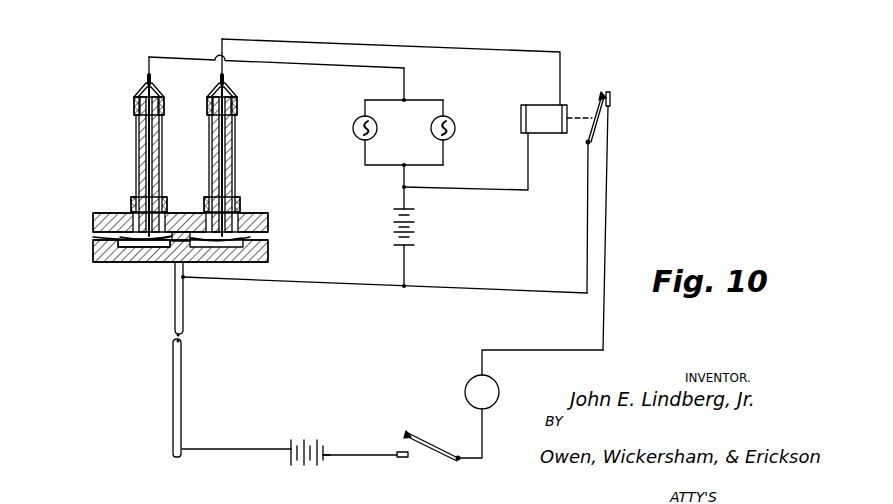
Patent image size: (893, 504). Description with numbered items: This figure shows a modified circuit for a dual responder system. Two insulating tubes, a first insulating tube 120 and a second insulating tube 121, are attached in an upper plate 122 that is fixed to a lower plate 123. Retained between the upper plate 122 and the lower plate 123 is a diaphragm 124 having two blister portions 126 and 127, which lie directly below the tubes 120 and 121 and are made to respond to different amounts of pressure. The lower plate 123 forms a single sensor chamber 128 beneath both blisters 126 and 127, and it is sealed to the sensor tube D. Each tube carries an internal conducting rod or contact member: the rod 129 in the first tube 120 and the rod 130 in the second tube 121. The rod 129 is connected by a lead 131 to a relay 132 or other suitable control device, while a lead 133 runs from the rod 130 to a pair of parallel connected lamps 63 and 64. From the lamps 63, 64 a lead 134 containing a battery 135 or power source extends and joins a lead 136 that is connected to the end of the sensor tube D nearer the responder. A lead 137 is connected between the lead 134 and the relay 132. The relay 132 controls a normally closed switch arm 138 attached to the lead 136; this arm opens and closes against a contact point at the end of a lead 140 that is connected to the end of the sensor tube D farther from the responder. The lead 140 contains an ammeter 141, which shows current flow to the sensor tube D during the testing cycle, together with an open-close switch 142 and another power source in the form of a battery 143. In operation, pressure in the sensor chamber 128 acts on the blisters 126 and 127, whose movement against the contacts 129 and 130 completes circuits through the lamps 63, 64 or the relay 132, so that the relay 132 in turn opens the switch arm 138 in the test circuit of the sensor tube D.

The first insulating tube 120 is at (236, 140).
The second insulating tube 121 is at (137, 141).
The upper plate 122 is at (241, 215).
The lower plate 123 is at (268, 258).
The diaphragm 124 is at (94, 240).
The blister portion 126 is at (216, 243).
The blister portion 127 is at (127, 248).
The sensor chamber 128 is at (146, 241).
The conducting rod or contact member 129 is at (222, 165).
The conducting rod or contact member 130 is at (148, 167).
The lead 131 is at (297, 41).
The relay 132 is at (544, 105).
The lead 133 is at (335, 65).
The lead 134 is at (404, 269).
The battery 135 is at (413, 230).
The lead 136 is at (341, 285).
The lead 137 is at (498, 190).
The switch arm 138 is at (596, 112).
The lead 140 is at (607, 210).
The ammeter 141 is at (471, 376).
The open-close switch 142 is at (444, 448).
The battery 143 is at (310, 438).
The lamp 63 is at (377, 131).
The lamp 64 is at (455, 131).
The sensor tube D is at (183, 395).